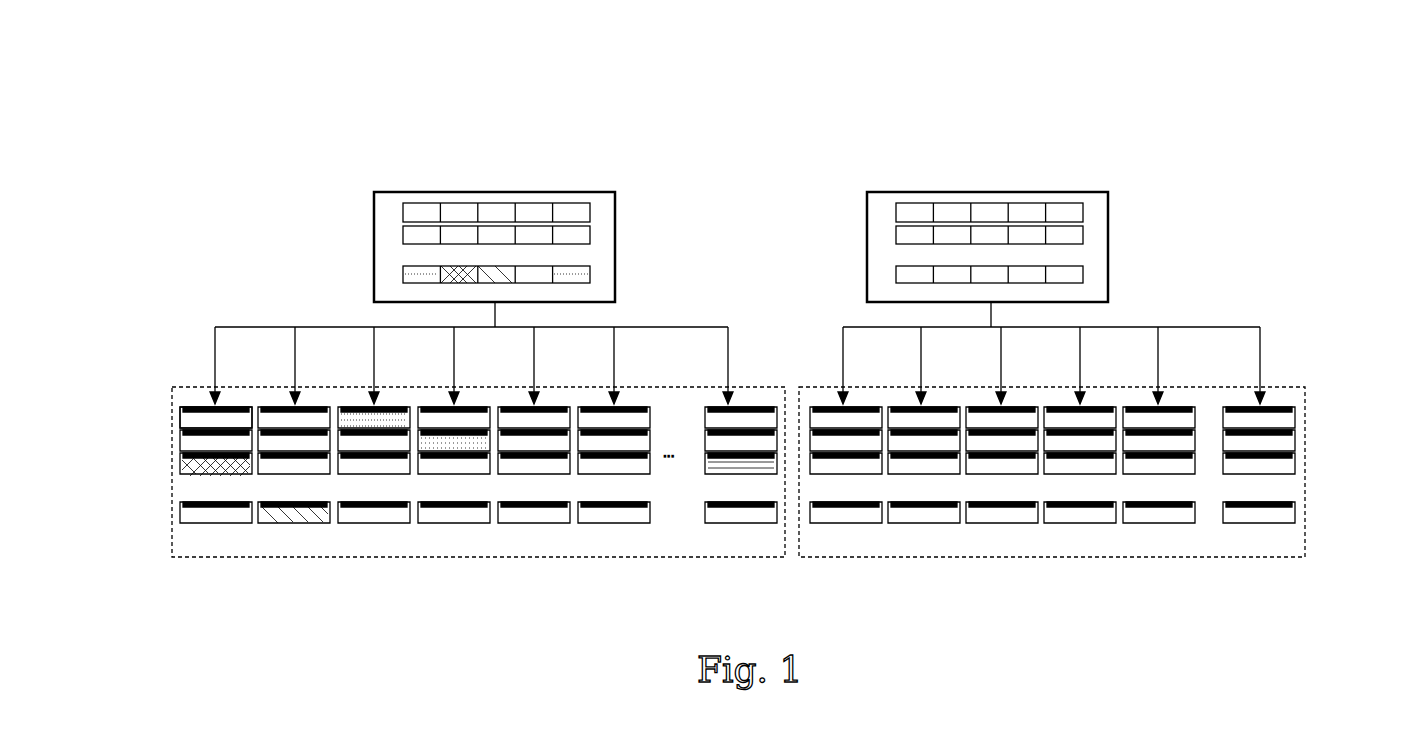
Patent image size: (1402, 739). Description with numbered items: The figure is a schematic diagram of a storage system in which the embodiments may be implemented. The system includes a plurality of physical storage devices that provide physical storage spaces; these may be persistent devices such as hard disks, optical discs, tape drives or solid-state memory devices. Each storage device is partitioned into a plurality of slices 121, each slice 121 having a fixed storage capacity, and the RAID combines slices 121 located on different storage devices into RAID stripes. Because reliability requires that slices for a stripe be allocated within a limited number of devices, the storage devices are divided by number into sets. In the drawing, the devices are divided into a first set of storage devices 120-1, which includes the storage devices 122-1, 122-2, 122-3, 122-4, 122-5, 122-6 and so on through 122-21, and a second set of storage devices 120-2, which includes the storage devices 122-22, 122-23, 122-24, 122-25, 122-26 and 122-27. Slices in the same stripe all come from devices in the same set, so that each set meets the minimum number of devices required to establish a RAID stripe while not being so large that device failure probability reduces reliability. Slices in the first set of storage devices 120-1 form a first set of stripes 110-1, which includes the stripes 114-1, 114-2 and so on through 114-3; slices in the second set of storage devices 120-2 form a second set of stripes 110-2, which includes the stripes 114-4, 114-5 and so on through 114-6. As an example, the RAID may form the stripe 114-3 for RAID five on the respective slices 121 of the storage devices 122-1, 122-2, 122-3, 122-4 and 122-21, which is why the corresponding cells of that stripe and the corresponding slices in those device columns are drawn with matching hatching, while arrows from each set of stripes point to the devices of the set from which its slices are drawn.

The first set of stripes 110-1 is at (488, 192).
The second set of stripes 110-2 is at (982, 192).
The stripe 114-1 is at (592, 212).
The stripe 114-2 is at (592, 234).
The stripe 114-3 is at (592, 275).
The stripe 114-4 is at (1084, 212).
The stripe 114-5 is at (1084, 234).
The stripe 114-6 is at (1084, 275).
The first set of storage devices 120-1 is at (190, 386).
The second set of storage devices 120-2 is at (1287, 386).
The slice 121 is at (182, 416).
The storage device 122-1 is at (193, 534).
The storage device 122-2 is at (280, 534).
The storage device 122-3 is at (362, 536).
The storage device 122-4 is at (450, 539).
The storage device 122-5 is at (528, 539).
The storage device 122-6 is at (600, 539).
The storage device 122-21 is at (727, 539).
The storage device 122-22 is at (842, 537).
The storage device 122-23 is at (920, 539).
The storage device 122-24 is at (997, 541).
The storage device 122-25 is at (1075, 539).
The storage device 122-26 is at (1158, 539).
The storage device 122-27 is at (1246, 537).